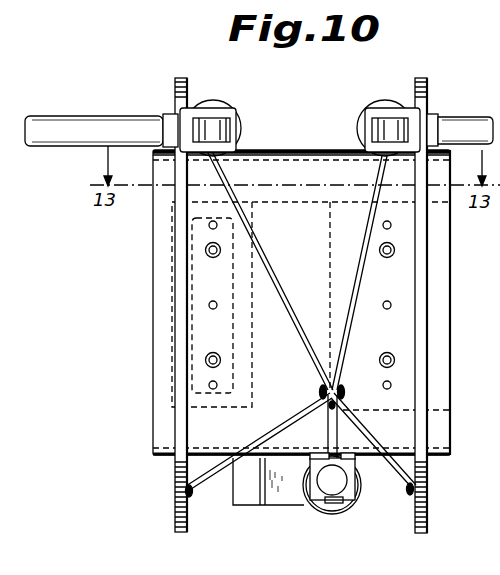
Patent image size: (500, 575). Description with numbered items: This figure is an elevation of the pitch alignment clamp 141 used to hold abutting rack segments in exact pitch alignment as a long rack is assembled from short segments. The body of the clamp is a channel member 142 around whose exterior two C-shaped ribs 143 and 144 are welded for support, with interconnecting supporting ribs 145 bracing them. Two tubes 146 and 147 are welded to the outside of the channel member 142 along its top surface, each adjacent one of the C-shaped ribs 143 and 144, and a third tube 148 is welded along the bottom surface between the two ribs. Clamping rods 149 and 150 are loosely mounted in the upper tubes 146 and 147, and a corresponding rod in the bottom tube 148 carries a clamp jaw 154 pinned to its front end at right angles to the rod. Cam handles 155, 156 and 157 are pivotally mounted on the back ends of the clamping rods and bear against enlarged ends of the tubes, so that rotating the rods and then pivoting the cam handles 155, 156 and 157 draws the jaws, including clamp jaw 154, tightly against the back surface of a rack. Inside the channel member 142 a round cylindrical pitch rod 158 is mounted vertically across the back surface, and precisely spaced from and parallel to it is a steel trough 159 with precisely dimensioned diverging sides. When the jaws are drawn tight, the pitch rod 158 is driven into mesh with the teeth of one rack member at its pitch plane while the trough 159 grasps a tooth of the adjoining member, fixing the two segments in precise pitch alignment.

The alignment clamp 141 is at (303, 146).
The channel member 142 is at (282, 150).
The C-shaped rib 143 is at (172, 528).
The C-shaped rib 144 is at (425, 530).
The interconnecting supporting ribs 145 is at (292, 422).
The tube 146 is at (209, 99).
The tube 147 is at (388, 99).
The tube 148 is at (333, 508).
The clamping rod 149 is at (231, 126).
The clamping rod 150 is at (378, 128).
The clamp jaw 154 is at (287, 496).
The cam handle 155 is at (115, 118).
The cam handle 156 is at (474, 115).
The cam handle 157 is at (337, 480).
The pitch rod 158 is at (172, 367).
The steel trough 159 is at (330, 236).